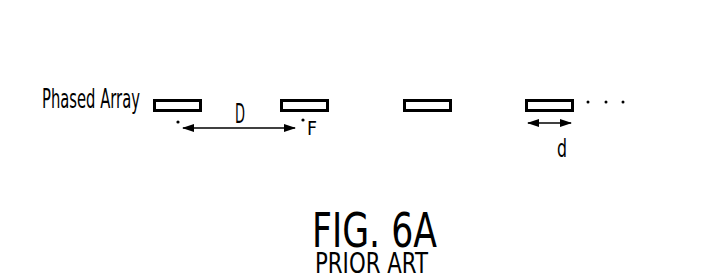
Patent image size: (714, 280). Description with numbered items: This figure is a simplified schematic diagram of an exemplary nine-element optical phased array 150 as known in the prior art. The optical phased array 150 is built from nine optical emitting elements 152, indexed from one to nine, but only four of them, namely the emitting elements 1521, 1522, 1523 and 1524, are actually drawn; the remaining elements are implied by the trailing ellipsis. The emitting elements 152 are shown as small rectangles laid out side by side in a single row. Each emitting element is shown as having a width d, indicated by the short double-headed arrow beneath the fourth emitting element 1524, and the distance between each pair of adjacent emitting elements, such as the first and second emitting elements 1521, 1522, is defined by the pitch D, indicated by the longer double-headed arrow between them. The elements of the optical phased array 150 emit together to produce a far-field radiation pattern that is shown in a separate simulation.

The optical phased array 150 is at (368, 87).
The optical emitting elements 152 is at (395, 109).
The first emitting element 1521 is at (178, 98).
The second emitting element 1522 is at (290, 99).
The third emitting element 1523 is at (427, 113).
The fourth emitting element 1524 is at (572, 110).